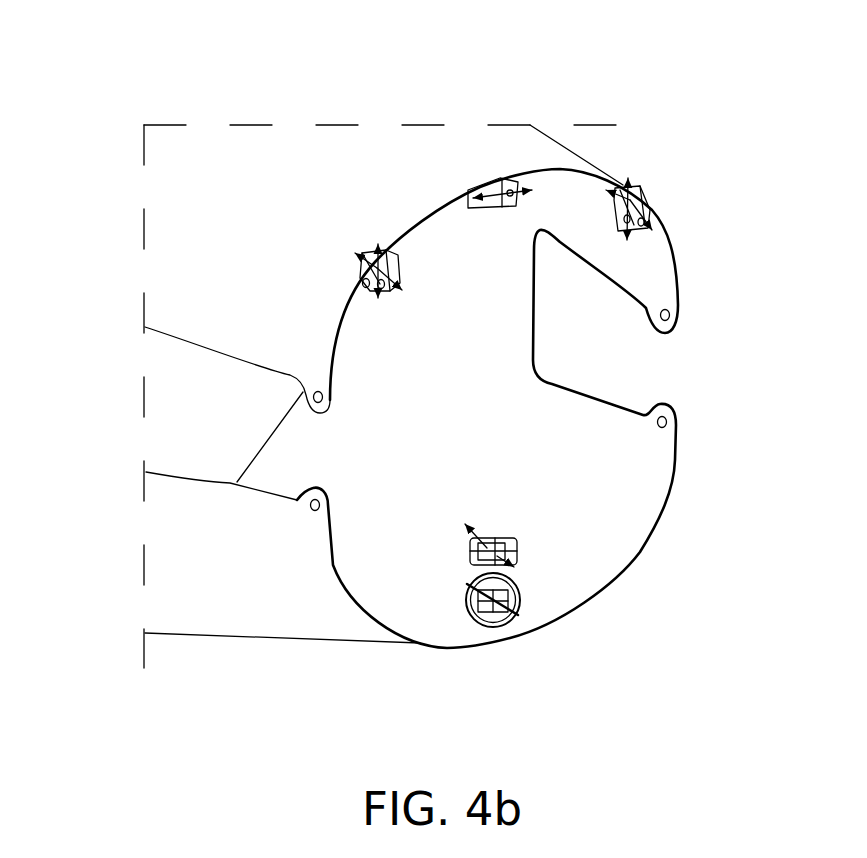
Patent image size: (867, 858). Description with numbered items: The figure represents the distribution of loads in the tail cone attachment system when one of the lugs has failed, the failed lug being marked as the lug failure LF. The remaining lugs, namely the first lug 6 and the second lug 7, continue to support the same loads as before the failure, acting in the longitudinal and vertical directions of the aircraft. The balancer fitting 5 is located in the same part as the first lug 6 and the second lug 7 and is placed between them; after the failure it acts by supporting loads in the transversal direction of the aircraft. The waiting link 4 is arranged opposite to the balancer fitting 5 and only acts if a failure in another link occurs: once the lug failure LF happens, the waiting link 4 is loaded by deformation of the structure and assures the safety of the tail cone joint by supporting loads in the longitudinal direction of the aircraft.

The waiting link 4 is at (518, 550).
The balancer fitting 5 is at (507, 182).
The first lug 6 is at (648, 205).
The second lug 7 is at (365, 278).
The lug failure LF is at (522, 616).